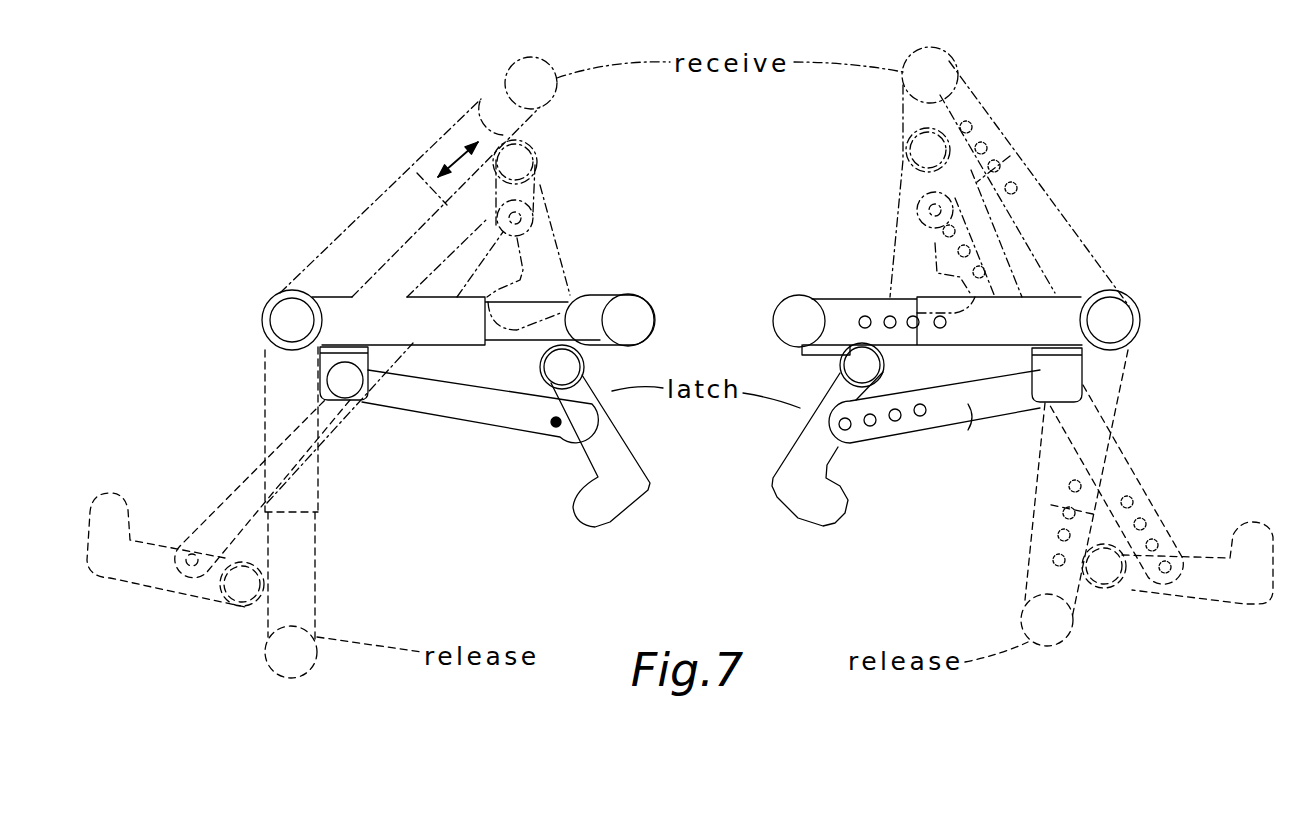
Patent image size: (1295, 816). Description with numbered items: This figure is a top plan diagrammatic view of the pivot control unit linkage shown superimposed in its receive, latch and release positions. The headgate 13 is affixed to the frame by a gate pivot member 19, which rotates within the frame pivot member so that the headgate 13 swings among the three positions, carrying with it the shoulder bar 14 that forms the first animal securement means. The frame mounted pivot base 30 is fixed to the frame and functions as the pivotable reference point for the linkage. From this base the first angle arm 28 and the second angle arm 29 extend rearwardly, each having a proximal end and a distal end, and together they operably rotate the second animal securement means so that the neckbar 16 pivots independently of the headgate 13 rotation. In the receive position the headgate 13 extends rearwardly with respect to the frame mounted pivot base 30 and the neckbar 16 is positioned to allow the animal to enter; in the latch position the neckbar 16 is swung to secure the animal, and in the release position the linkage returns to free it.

The headgate 13 is at (1068, 244).
The shoulder bar 14 is at (967, 77).
The neckbar 16 is at (903, 230).
The gate pivot member 19 is at (1137, 315).
The first angle arm 28 is at (908, 176).
The second angle arm 29 is at (1006, 260).
The frame mounted pivot base 30 is at (1068, 375).